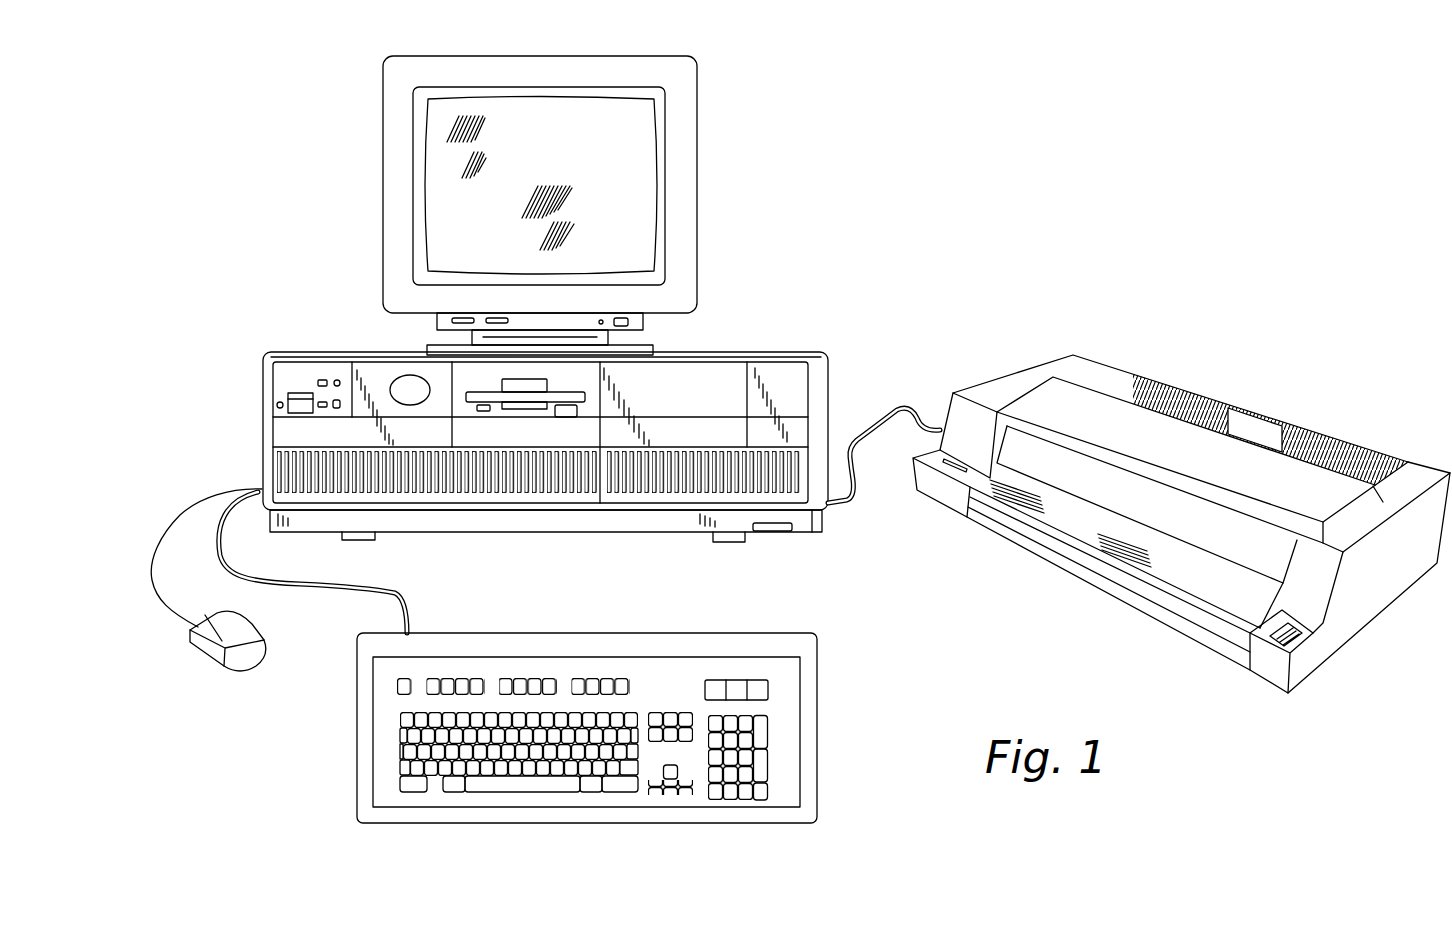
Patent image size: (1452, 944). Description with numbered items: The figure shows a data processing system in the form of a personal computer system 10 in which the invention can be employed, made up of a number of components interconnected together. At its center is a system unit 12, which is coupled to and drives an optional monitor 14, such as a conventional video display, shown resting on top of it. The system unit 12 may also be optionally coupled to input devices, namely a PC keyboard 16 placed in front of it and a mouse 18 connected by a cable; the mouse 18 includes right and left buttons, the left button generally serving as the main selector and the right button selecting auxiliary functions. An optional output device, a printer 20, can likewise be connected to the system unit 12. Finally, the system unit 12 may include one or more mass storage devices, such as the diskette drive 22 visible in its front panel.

The personal computer system 10 is at (906, 175).
The system unit 12 is at (545, 426).
The monitor 14 is at (712, 212).
The PC keyboard 16 is at (700, 626).
The mouse 18 is at (207, 648).
The printer 20 is at (1010, 355).
The diskette drive 22 is at (530, 407).